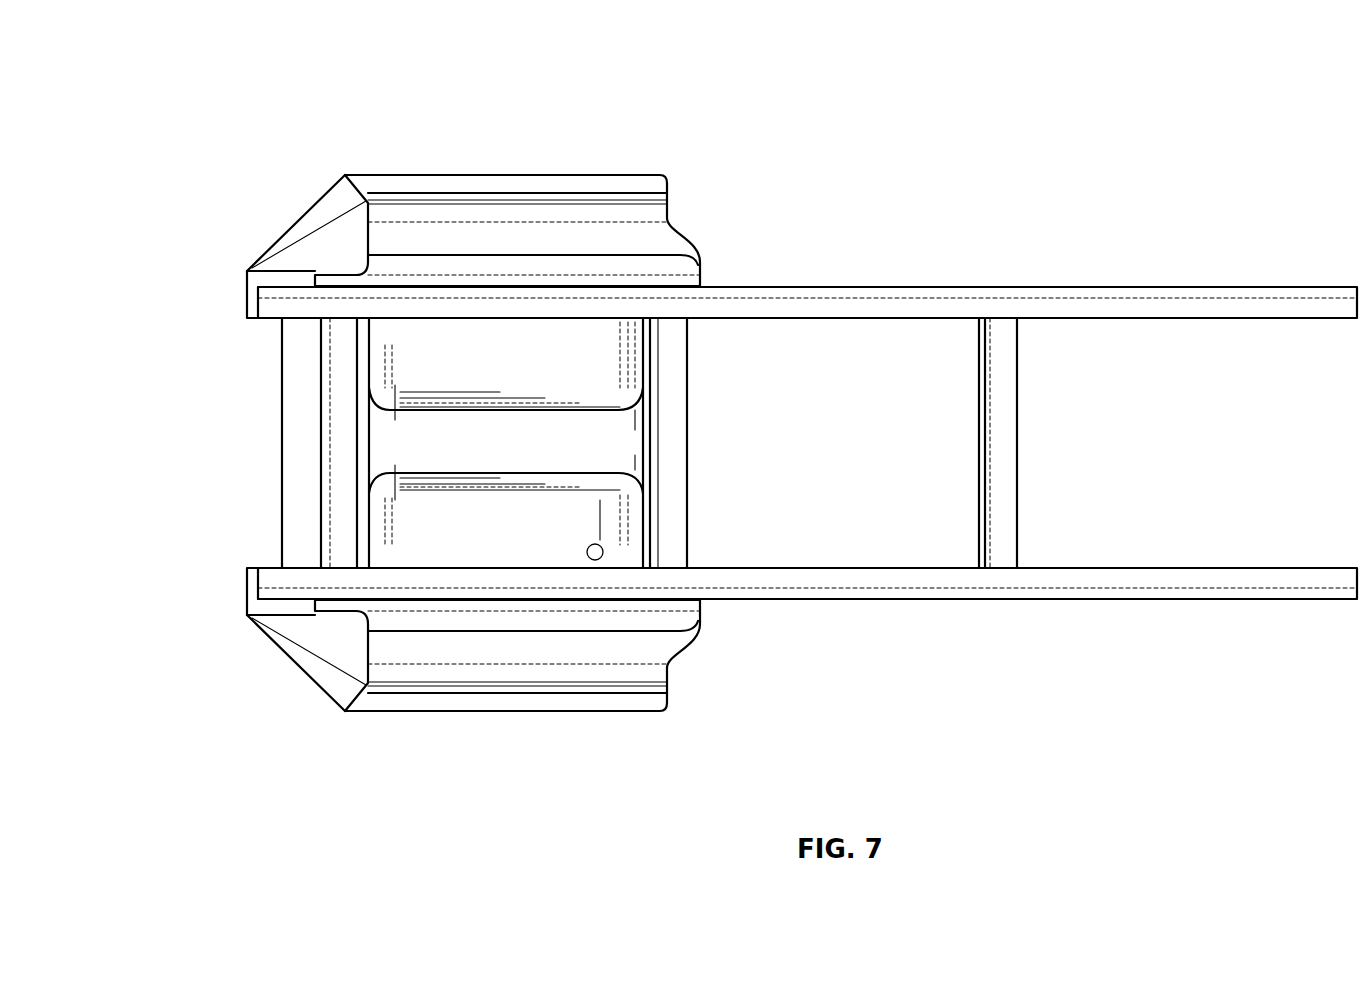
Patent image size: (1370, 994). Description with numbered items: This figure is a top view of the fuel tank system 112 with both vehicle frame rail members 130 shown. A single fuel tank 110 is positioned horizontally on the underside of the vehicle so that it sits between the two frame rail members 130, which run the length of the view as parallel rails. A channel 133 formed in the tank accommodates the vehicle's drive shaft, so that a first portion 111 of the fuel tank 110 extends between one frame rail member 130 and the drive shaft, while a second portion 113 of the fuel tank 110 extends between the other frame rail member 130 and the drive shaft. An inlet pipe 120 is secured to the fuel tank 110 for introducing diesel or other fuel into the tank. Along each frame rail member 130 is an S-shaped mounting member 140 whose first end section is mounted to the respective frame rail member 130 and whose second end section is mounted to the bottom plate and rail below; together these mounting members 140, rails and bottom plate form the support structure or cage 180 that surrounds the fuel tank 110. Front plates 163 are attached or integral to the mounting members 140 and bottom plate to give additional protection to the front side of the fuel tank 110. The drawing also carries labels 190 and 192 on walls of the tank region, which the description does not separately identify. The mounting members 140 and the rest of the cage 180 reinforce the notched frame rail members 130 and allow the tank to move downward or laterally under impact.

The fuel tank 110 is at (620, 372).
The first portion of the fuel tank 111 is at (415, 360).
The fuel tank system 112 is at (838, 110).
The second portion of the fuel tank 113 is at (605, 512).
The inlet pipe 120 is at (605, 548).
The frame rail member 130 is at (918, 286).
The channel 133 is at (432, 446).
The mounting member 140 is at (696, 224).
The front plate 163 is at (318, 236).
The support structure or cage 180 is at (552, 132).
The outer wall 190 is at (282, 412).
The inner wall 192 is at (687, 343).